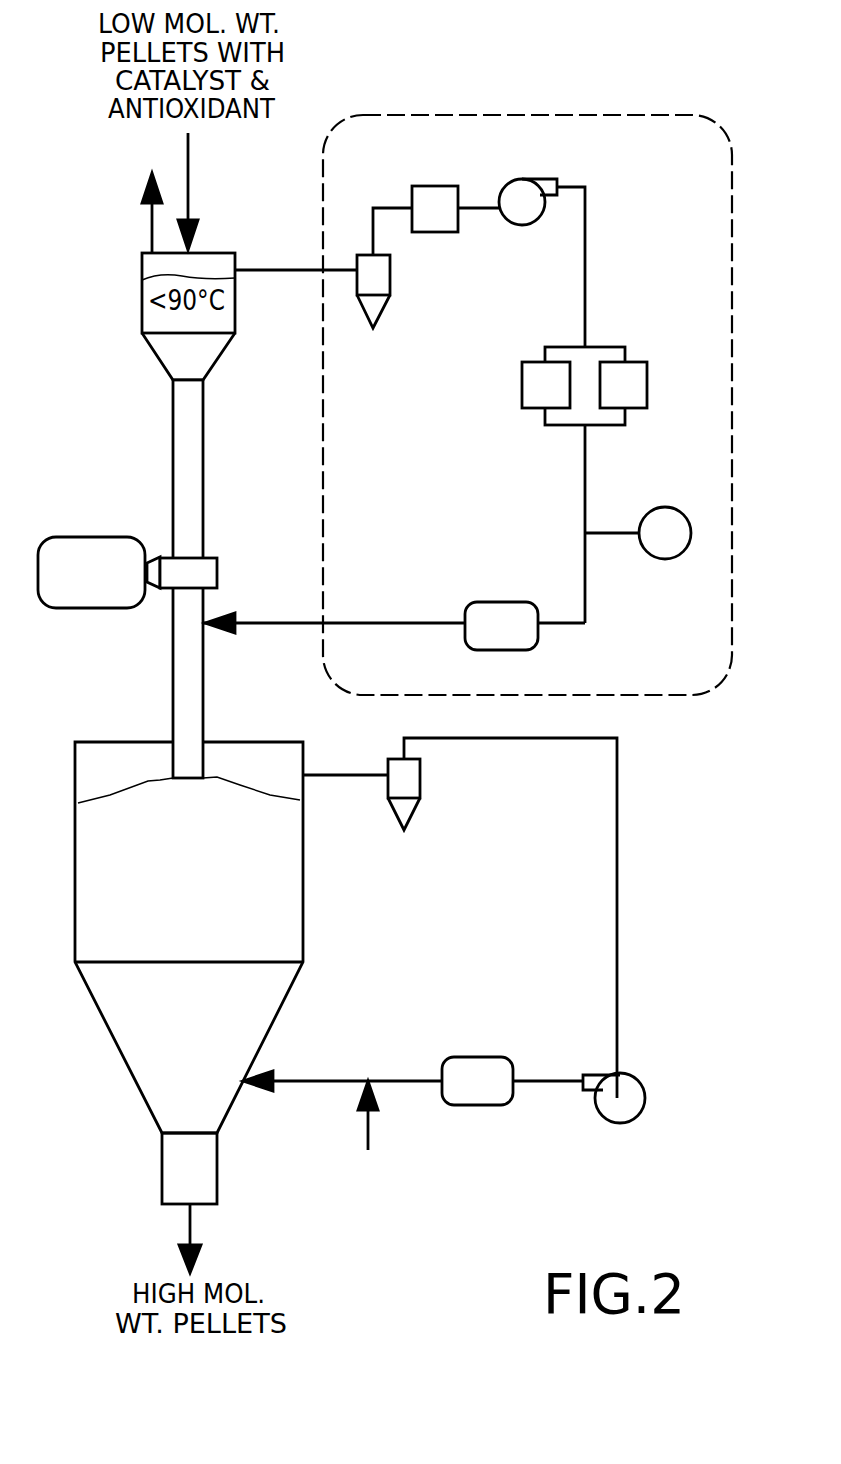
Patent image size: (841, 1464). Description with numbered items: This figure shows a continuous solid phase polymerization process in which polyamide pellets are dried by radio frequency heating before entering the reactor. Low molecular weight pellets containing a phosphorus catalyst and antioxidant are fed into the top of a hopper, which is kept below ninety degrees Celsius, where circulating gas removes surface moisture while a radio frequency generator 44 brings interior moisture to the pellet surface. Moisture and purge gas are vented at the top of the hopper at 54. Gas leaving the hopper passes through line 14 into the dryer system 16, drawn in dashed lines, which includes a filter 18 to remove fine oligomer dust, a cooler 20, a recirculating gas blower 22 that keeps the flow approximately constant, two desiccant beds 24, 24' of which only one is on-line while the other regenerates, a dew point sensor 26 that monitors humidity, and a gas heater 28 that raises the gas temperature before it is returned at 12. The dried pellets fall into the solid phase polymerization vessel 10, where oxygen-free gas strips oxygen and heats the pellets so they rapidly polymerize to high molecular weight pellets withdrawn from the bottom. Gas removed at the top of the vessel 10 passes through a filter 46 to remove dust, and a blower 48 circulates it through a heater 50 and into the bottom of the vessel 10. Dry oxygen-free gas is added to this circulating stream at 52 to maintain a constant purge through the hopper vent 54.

The solid phase polymerization vessel 10 is at (208, 873).
The gas feed inlet 12 is at (278, 626).
The gas exit line 14 is at (295, 268).
The dryer system 16 is at (733, 413).
The filter 18 is at (364, 255).
The cooler 20 is at (428, 185).
The recirculating gas blower 22 is at (532, 178).
The desiccant bed 24 is at (521, 373).
The desiccant bed 24' is at (651, 371).
The dew point sensor 26 is at (663, 508).
The gas heater 28 is at (492, 600).
The radio frequency generator 44 is at (80, 537).
The filter 46 is at (422, 785).
The blower 48 is at (632, 1077).
The heater 50 is at (480, 1057).
The oxygen-free gas addition point 52 is at (362, 1137).
The hopper purge vent 54 is at (150, 213).